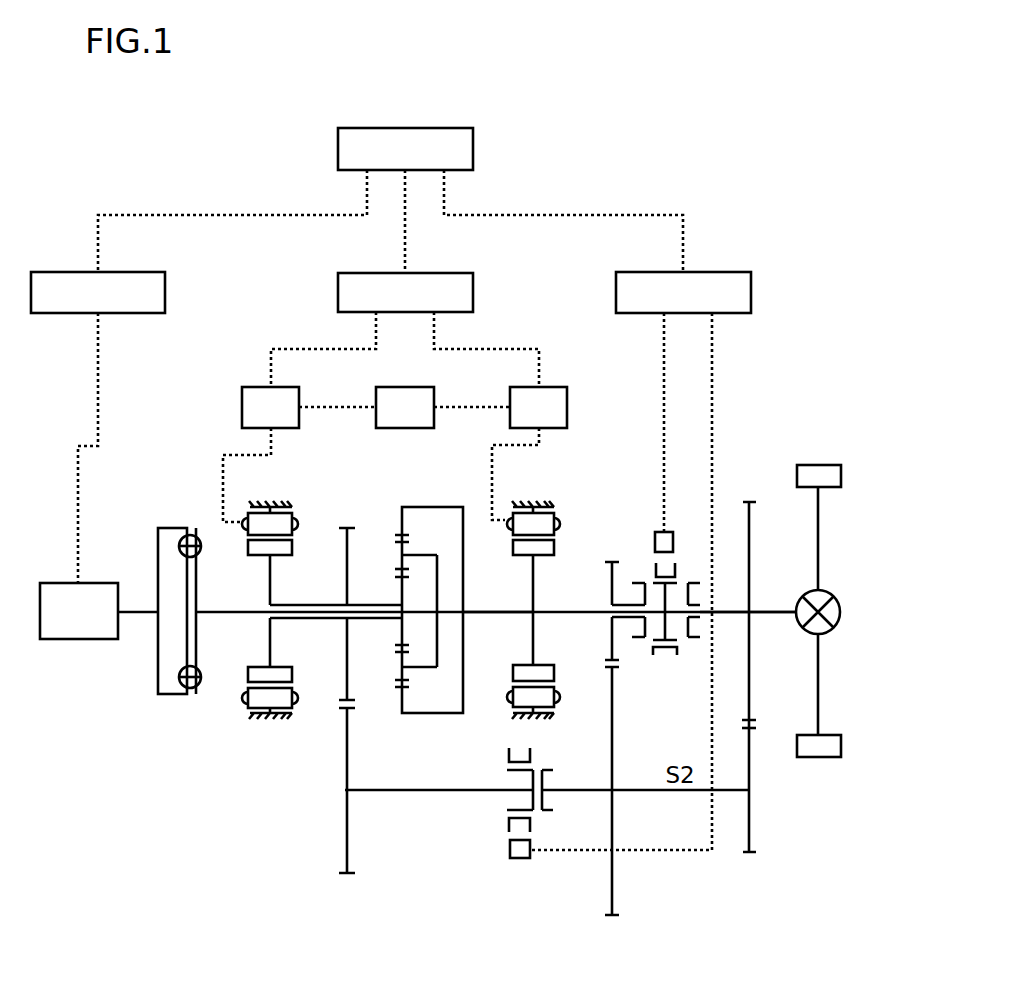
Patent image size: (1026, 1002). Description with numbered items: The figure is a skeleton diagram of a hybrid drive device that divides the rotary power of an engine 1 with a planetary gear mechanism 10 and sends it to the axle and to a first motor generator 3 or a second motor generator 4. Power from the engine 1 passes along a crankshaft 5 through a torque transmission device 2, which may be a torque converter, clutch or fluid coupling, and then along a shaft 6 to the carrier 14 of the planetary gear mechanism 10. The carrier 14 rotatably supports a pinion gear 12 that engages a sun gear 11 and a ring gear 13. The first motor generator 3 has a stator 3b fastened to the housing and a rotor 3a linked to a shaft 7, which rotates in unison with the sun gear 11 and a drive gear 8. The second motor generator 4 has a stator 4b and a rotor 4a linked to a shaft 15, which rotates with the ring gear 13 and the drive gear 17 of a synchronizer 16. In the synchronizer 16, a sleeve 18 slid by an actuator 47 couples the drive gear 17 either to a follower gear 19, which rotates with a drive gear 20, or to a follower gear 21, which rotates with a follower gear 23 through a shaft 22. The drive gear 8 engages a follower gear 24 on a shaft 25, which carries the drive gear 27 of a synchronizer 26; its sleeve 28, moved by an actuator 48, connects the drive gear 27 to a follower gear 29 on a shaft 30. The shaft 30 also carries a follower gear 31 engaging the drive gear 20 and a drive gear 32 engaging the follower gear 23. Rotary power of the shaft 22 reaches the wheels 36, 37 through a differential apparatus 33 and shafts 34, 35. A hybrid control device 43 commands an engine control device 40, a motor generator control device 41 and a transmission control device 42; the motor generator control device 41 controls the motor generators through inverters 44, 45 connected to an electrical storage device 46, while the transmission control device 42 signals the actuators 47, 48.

The engine 1 is at (96, 583).
The torque transmission device 2 is at (172, 528).
The first motor generator 3 is at (289, 594).
The rotor 3a is at (284, 565).
The stator 3b is at (293, 543).
The second motor generator 4 is at (553, 594).
The rotor 4a is at (548, 566).
The stator 4b is at (555, 543).
The crankshaft 5 is at (134, 612).
The shaft 6 is at (222, 612).
The shaft 7 is at (315, 618).
The drive gear 8 is at (350, 700).
The planetary gear mechanism 10 is at (408, 577).
The sun gear 11 is at (396, 577).
The pinion gear 12 is at (396, 569).
The ring gear 13 is at (397, 535).
The carrier 14 is at (437, 555).
The shaft 15 is at (490, 612).
The synchronizer 16 is at (658, 629).
The drive gear 17 is at (666, 670).
The sleeve 18 is at (655, 565).
The follower gear 19 is at (640, 640).
The drive gear 20 is at (607, 660).
The follower gear 21 is at (690, 583).
The shaft 22 is at (728, 612).
The follower gear 23 is at (756, 720).
The follower gear 24 is at (343, 708).
The shaft 25 is at (385, 790).
The synchronizer 26 is at (523, 787).
The drive gear 27 is at (505, 775).
The sleeve 28 is at (532, 756).
The follower gear 29 is at (555, 768).
The shaft 30 is at (621, 791).
The follower gear 31 is at (606, 667).
The drive gear 32 is at (755, 730).
The differential apparatus 33 is at (834, 598).
The shaft 34 is at (820, 520).
The shaft 35 is at (820, 672).
The wheel 36 is at (842, 476).
The wheel 37 is at (842, 745).
The engine control device 40 is at (166, 282).
The motor generator control device 41 is at (474, 282).
The transmission control device 42 is at (752, 282).
The hybrid control device 43 is at (474, 138).
The inverter 44 is at (250, 387).
The inverter 45 is at (556, 387).
The electrical storage device 46 is at (405, 387).
The actuator 47 is at (656, 530).
The actuator 48 is at (520, 862).